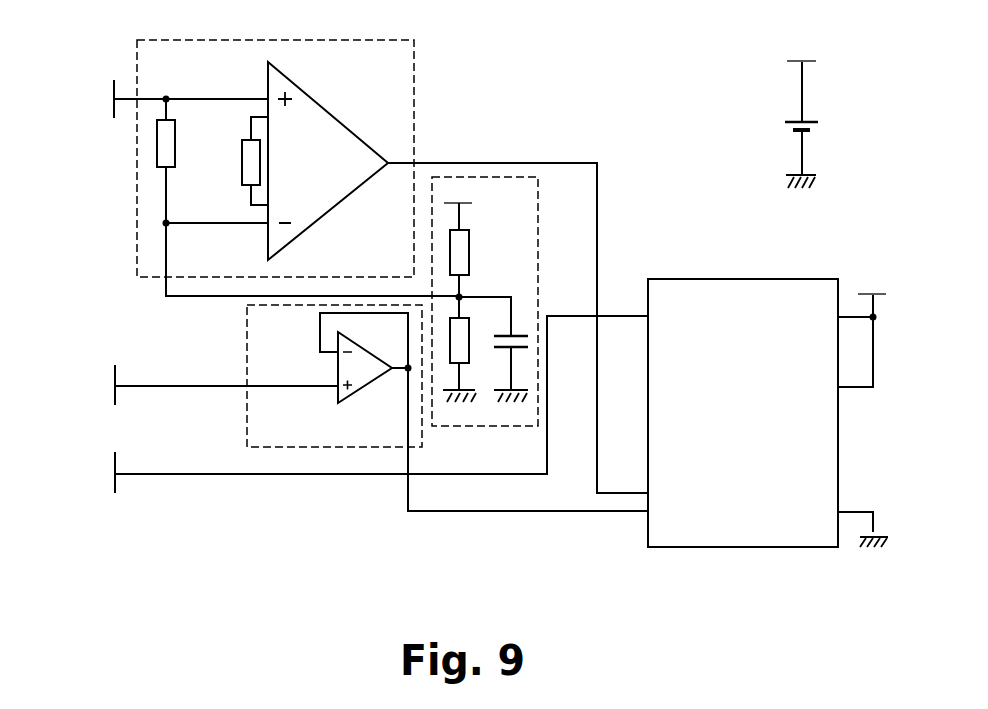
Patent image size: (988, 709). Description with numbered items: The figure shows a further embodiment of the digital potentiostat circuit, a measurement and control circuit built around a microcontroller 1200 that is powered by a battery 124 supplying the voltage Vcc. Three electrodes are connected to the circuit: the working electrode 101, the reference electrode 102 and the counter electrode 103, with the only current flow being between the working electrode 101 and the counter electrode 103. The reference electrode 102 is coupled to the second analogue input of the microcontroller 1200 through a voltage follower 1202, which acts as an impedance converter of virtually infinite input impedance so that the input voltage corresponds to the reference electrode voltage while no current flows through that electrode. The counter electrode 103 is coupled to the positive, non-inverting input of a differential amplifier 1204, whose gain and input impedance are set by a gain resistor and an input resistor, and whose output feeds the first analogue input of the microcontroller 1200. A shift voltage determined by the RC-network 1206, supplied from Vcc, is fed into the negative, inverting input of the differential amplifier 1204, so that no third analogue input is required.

The working electrode 101 is at (103, 508).
The reference electrode 102 is at (107, 377).
The counter electrode 103 is at (108, 132).
The battery 124 is at (813, 98).
The microcontroller 1200 is at (755, 532).
The voltage follower 1202 is at (297, 442).
The differential amplifier 1204 is at (402, 50).
The RC-network 1206 is at (517, 195).